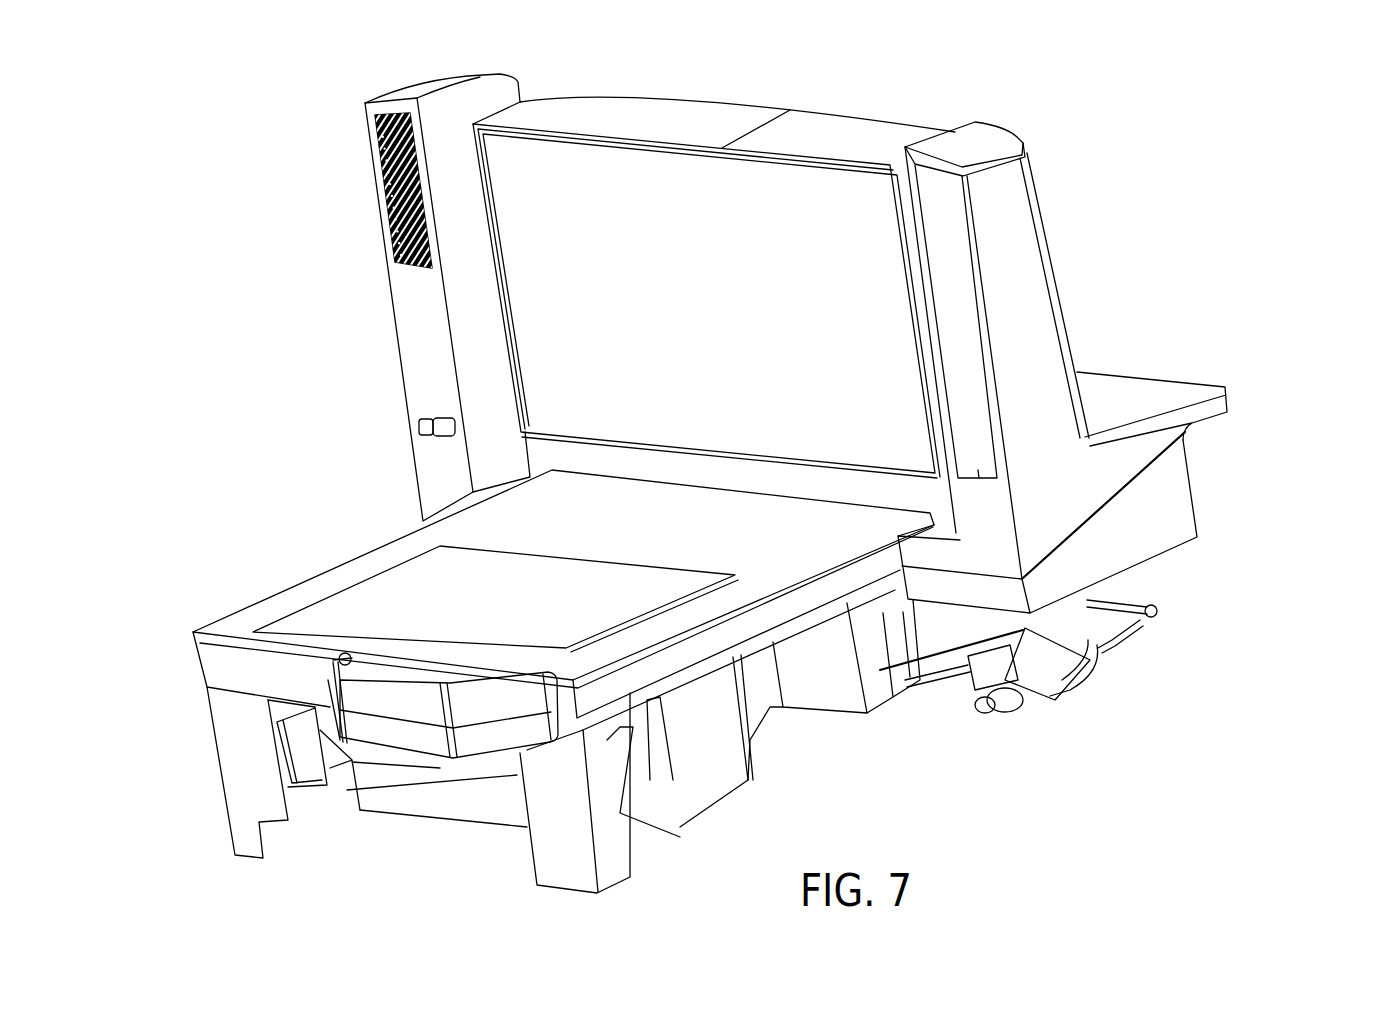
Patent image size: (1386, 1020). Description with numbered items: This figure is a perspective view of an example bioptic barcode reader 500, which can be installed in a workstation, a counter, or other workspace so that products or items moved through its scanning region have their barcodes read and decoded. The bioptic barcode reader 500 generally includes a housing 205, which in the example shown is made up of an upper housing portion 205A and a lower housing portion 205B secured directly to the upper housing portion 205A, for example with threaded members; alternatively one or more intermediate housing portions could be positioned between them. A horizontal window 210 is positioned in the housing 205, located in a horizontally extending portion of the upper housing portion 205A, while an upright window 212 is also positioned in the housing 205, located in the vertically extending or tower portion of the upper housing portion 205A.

The bioptic barcode reader 500 is at (298, 74).
The upright window 212 is at (540, 322).
The housing 205 is at (393, 512).
The upper housing portion 205A is at (1130, 433).
The lower housing portion 205B is at (1133, 537).
The horizontal window 210 is at (343, 613).